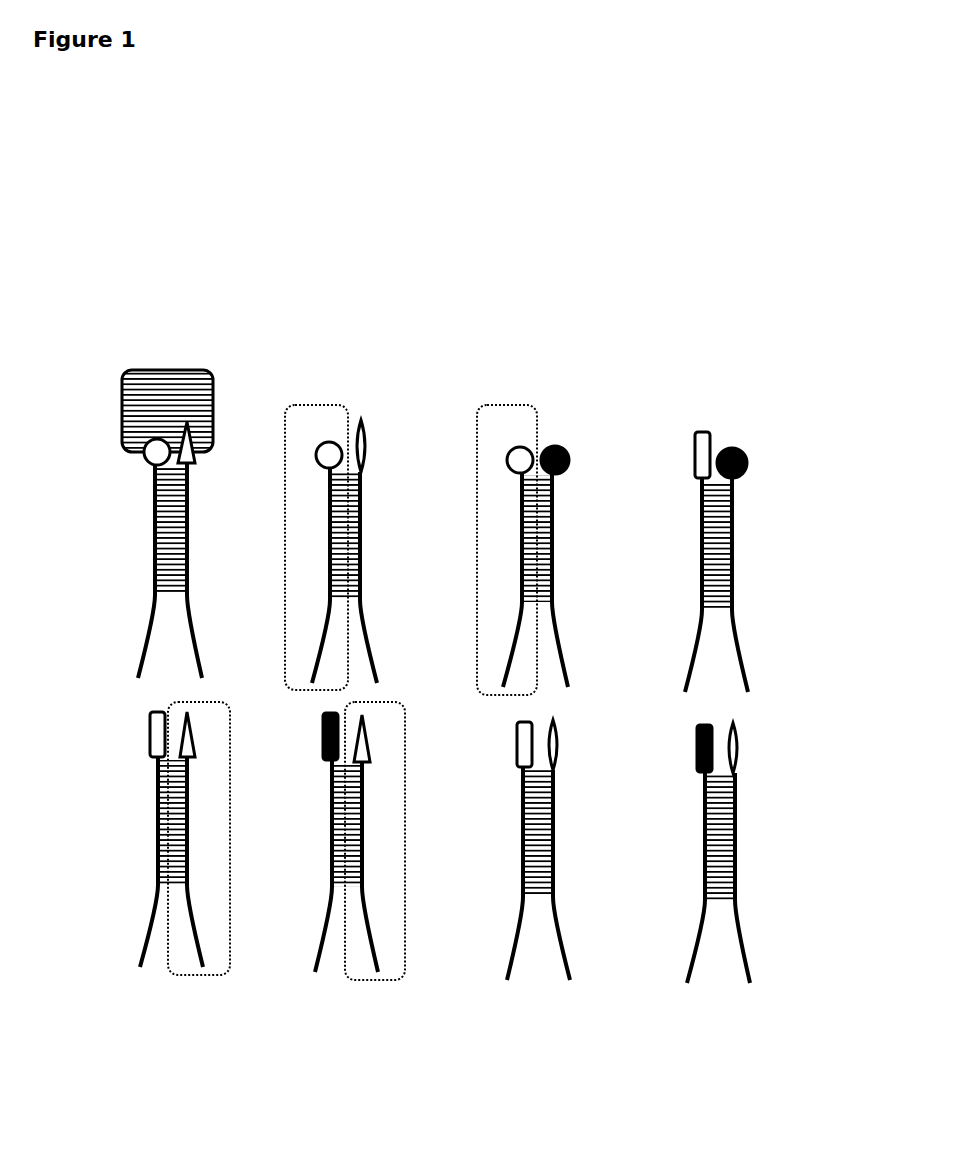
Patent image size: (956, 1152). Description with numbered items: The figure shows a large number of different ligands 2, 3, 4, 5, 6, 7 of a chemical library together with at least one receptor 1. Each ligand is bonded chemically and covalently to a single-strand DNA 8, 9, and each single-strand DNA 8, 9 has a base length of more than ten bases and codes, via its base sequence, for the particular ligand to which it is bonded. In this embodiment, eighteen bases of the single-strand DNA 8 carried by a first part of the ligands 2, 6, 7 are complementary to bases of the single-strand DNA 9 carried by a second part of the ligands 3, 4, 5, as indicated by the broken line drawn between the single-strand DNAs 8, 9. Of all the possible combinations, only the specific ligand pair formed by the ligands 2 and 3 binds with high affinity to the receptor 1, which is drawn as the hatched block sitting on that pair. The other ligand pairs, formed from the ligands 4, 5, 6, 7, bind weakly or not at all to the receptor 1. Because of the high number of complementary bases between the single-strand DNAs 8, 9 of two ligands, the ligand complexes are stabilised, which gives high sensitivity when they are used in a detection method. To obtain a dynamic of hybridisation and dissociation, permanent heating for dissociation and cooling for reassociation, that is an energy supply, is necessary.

The receptor 1 is at (216, 402).
The ligand 2 is at (140, 465).
The ligand 3 is at (203, 463).
The ligand 4 is at (579, 440).
The ligand 5 is at (377, 457).
The ligand 6 is at (692, 463).
The ligand 7 is at (322, 745).
The single-strand DNA 8 is at (142, 653).
The single-strand DNA 9 is at (199, 653).